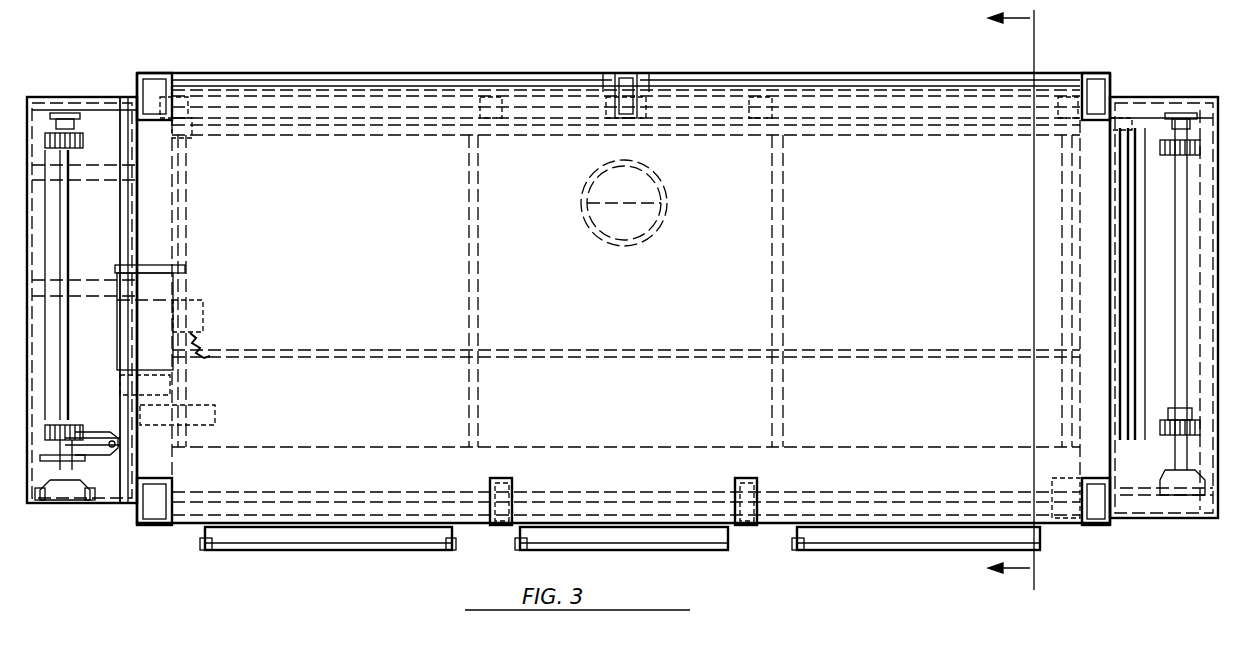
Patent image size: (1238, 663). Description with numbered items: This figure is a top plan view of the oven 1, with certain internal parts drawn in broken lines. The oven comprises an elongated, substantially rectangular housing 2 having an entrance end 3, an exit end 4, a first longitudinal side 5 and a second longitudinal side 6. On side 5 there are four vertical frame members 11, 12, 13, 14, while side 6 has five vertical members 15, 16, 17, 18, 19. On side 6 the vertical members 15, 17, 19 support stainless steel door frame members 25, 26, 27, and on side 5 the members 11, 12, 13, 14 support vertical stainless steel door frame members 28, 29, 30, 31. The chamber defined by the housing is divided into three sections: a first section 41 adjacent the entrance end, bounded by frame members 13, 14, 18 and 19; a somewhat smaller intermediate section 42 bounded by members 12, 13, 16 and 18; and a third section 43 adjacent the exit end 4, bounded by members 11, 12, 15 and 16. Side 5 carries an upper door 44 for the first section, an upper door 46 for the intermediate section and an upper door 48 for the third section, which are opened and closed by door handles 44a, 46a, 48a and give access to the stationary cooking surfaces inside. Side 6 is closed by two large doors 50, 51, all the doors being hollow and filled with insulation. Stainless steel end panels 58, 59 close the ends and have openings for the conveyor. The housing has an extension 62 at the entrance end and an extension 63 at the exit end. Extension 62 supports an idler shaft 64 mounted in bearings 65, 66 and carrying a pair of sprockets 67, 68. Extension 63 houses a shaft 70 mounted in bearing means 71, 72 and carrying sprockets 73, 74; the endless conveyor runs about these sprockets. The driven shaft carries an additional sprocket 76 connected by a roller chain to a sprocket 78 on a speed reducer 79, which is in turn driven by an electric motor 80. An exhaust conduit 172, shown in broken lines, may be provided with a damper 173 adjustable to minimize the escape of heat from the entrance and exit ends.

The oven 1 is at (732, 66).
The housing 2 is at (773, 66).
The entrance end 3 is at (1110, 250).
The exit end 4 is at (95, 256).
The first longitudinal side 5 is at (392, 530).
The second longitudinal side 6 is at (470, 74).
The vertical frame member 11 is at (170, 483).
The vertical frame member 12 is at (514, 486).
The vertical frame member 13 is at (770, 483).
The vertical frame member 14 is at (1083, 484).
The vertical frame member 15 is at (163, 118).
The vertical frame member 16 is at (491, 120).
The vertical frame member 17 is at (612, 112).
The vertical frame member 18 is at (762, 120).
The vertical frame member 19 is at (1068, 112).
The door frame member 25 is at (152, 73).
The door frame member 26 is at (626, 73).
The door frame member 27 is at (1096, 73).
The door frame member 28 is at (158, 544).
The door frame member 29 is at (500, 527).
The door frame member 30 is at (746, 527).
The door frame member 31 is at (1090, 527).
The first section 41 is at (925, 300).
The intermediate section 42 is at (637, 325).
The third section 43 is at (332, 316).
The upper door 44 is at (918, 566).
The door handle 44a is at (805, 545).
The upper door 46 is at (640, 528).
The door handle 46a is at (565, 545).
The upper door 48 is at (303, 530).
The door handle 48a is at (228, 548).
The door 50 is at (860, 59).
The door 51 is at (333, 75).
The end panel 58 is at (1110, 224).
The end panel 59 is at (137, 213).
The extension 62 is at (1213, 318).
The extension 63 is at (102, 324).
The idler shaft 64 is at (1177, 278).
The bearing 65 is at (1110, 125).
The bearing 66 is at (1176, 497).
The sprocket 67 is at (1165, 145).
The sprocket 68 is at (1165, 428).
The shaft 70 is at (64, 233).
The bearing means 71 is at (68, 117).
The bearing means 72 is at (65, 519).
The sprocket 73 is at (84, 141).
The sprocket 74 is at (82, 440).
The sprocket 76 is at (65, 455).
The sprocket 78 is at (72, 463).
The speed reducer 79 is at (135, 392).
The electric motor 80 is at (190, 325).
The exhaust conduit 172 is at (655, 235).
The damper 173 is at (638, 192).